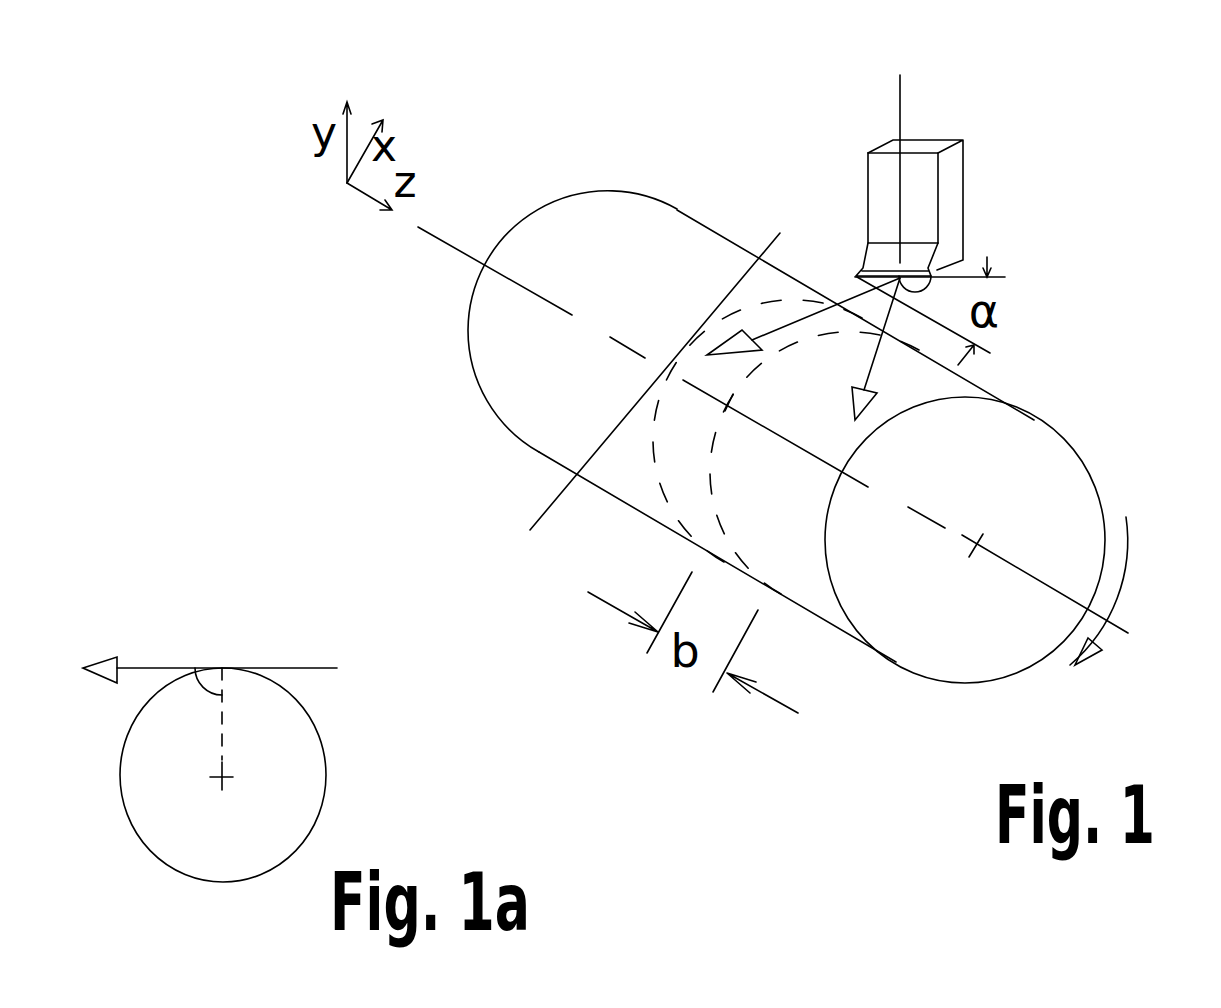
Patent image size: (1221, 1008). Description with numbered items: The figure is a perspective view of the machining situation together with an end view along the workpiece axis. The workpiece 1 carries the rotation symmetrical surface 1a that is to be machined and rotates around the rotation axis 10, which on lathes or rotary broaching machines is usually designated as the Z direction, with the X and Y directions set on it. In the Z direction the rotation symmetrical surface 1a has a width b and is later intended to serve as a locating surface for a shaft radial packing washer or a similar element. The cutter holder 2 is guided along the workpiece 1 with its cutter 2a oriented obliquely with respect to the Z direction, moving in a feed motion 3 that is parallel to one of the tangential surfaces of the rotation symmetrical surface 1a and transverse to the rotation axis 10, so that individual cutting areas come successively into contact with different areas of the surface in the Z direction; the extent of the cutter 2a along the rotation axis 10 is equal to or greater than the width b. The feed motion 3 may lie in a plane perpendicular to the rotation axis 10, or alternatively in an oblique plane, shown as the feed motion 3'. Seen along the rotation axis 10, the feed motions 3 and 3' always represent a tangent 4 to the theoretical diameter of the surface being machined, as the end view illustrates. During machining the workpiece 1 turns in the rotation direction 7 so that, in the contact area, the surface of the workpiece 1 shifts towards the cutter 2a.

In FIG. 1, the workpiece 1 is at (786, 437).
In FIG. 1A, the workpiece 1 is at (223, 775).
In FIG. 1, the rotation symmetrical surface 1a is at (786, 447).
In FIG. 1, the cutter holder 2 is at (909, 175).
In FIG. 1, the cutter 2a is at (868, 263).
In FIG. 1, the feed motion 3 is at (803, 261).
In FIG. 1A, the feed motion 3 is at (227, 626).
In FIG. 1, the feed motion 3' is at (840, 351).
In FIG. 1A, the feed motion 3' is at (100, 670).
In FIG. 1, the tangent 4 is at (553, 505).
In FIG. 1, the rotation direction 7 is at (1128, 537).
In FIG. 1, the rotation axis 10 is at (440, 236).